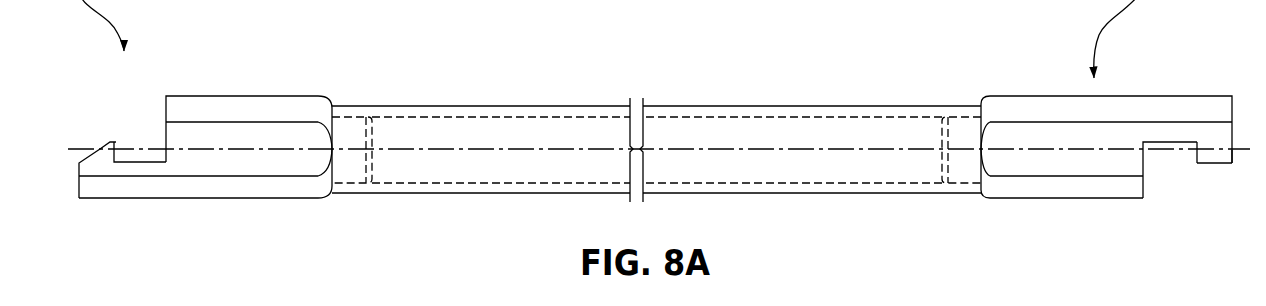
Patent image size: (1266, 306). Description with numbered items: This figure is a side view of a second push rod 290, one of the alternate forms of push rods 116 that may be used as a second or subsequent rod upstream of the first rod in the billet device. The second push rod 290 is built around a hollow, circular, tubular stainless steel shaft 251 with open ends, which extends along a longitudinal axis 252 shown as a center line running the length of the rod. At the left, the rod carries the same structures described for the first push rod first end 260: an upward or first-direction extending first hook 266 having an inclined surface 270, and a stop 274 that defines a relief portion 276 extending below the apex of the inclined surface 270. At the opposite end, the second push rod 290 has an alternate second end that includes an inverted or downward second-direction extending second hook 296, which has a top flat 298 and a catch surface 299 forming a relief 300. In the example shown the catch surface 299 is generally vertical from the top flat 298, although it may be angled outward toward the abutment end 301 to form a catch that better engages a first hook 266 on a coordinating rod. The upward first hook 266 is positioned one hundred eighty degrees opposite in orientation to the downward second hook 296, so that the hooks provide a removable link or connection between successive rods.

The push rod 116 is at (513, 91).
The tubular shaft 251 is at (596, 106).
The longitudinal axis 252 is at (440, 148).
The first end 260 is at (644, 227).
The first hook 266 is at (110, 131).
The inclined surface 270 is at (97, 157).
The stop 274 is at (166, 110).
The relief portion 276 is at (141, 137).
The second push rod 290 is at (376, 103).
The second hook 296 is at (1233, 172).
The top flat 298 is at (1213, 164).
The catch surface 299 is at (1196, 150).
The relief 300 is at (1170, 161).
The abutment end 301 is at (1233, 123).